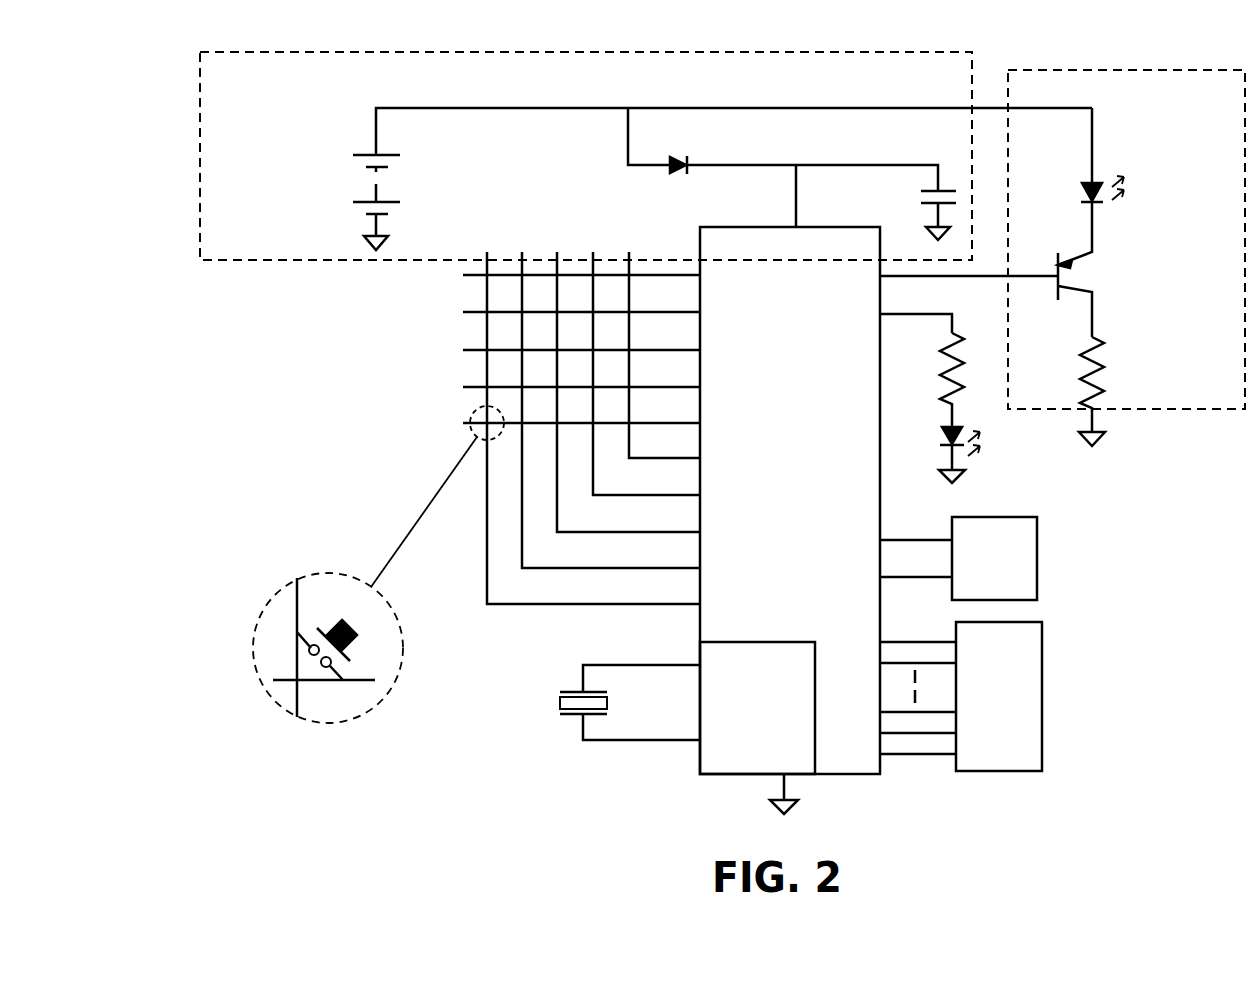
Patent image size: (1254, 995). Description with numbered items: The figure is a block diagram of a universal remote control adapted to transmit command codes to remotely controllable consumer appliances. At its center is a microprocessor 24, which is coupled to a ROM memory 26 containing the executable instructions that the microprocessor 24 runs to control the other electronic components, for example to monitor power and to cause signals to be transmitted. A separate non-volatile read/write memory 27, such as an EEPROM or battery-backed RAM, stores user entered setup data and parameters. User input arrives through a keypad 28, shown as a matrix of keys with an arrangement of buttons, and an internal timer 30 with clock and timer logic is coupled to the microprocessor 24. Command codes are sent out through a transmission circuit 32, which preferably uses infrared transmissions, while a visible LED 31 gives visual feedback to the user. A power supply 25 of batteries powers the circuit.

The microprocessor 24 is at (762, 301).
The power supply 25 is at (252, 262).
The ROM memory 26 is at (1015, 772).
The non-volatile read/write memory 27 is at (1035, 600).
The keypad 28 is at (493, 335).
The internal timer 30 is at (732, 762).
The visible LED 31 is at (958, 450).
The transmission circuit 32 is at (1157, 68).